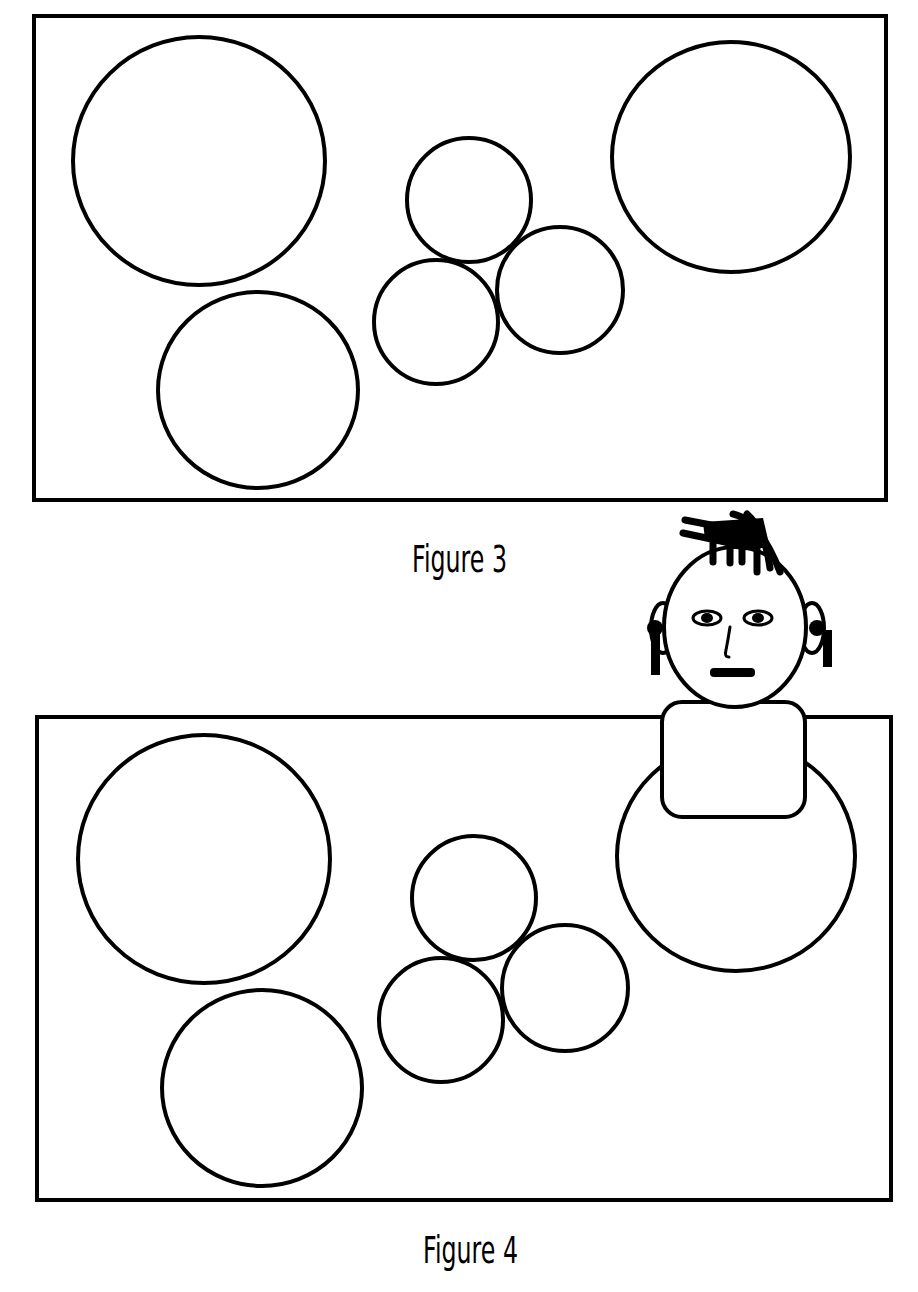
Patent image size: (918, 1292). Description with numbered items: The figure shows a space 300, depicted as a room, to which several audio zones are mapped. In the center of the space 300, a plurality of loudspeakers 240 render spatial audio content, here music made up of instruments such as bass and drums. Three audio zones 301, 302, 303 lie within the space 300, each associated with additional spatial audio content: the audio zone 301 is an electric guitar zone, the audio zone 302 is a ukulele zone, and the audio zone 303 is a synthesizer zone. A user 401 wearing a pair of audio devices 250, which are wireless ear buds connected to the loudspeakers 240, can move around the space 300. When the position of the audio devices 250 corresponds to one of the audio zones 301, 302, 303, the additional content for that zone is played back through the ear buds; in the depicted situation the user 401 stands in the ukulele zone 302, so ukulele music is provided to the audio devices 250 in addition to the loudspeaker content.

In FIG. 3, the space 300 is at (828, 471).
In FIG. 4, the space 300 is at (810, 1177).
In FIG. 3, the audio zone 301 is at (323, 140).
In FIG. 4, the audio zone 301 is at (328, 838).
In FIG. 3, the audio zone 302 is at (843, 113).
In FIG. 4, the audio zone 302 is at (848, 811).
In FIG. 3, the audio zone 303 is at (158, 380).
In FIG. 4, the audio zone 303 is at (163, 1078).
In FIG. 3, the loudspeakers 240 is at (442, 219).
In FIG. 4, the loudspeakers 240 is at (447, 917).
In FIG. 4, the user 401 is at (665, 588).
In FIG. 4, the audio devices 250 is at (827, 628).